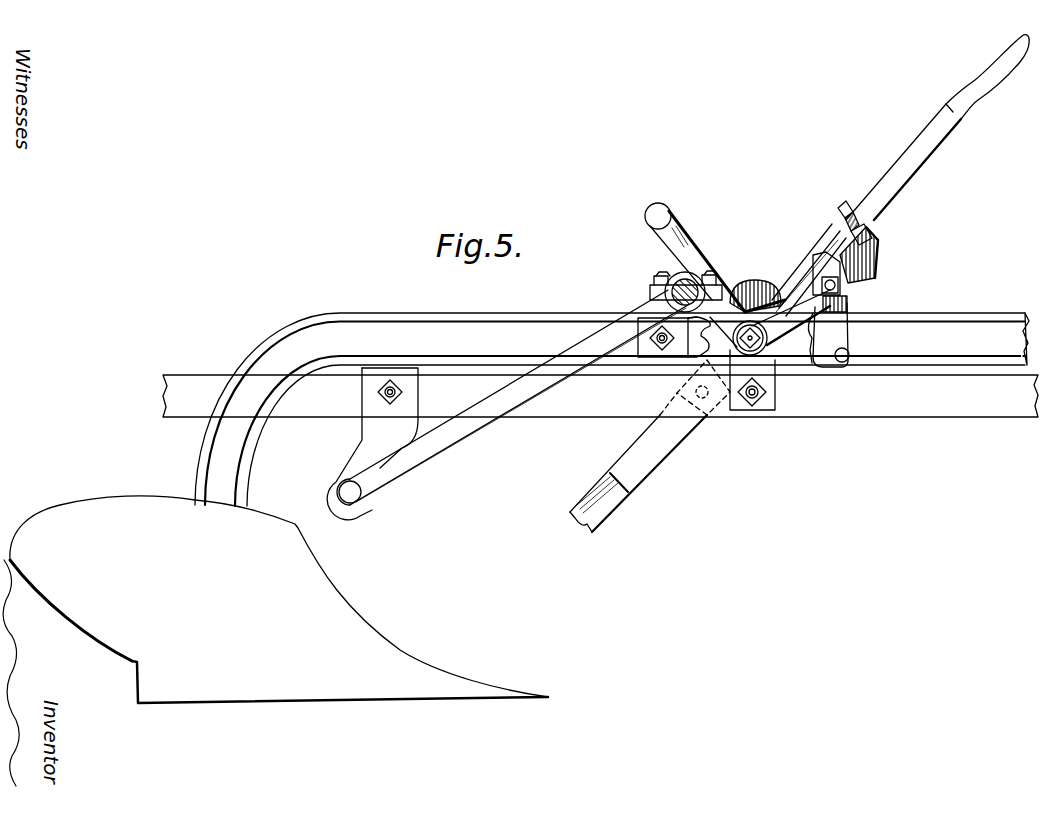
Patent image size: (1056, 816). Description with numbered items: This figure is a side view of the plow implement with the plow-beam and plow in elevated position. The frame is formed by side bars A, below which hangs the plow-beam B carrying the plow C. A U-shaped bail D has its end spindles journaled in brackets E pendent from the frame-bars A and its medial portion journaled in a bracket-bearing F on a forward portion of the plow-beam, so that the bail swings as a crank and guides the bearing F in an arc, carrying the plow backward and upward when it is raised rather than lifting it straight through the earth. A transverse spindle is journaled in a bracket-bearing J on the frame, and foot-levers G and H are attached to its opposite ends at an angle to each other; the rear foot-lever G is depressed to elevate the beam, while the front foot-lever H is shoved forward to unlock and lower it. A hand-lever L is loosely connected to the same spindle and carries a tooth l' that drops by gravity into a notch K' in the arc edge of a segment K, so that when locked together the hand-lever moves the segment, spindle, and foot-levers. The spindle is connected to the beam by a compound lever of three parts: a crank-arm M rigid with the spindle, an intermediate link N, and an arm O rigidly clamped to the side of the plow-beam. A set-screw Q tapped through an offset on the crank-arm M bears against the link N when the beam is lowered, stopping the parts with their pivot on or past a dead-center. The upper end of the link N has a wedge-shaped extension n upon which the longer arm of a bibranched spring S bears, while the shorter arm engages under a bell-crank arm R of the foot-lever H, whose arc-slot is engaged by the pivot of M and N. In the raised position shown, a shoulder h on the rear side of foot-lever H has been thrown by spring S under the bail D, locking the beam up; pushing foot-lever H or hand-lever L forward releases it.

The side bars of the frame A is at (1020, 309).
The plow-beam B is at (994, 441).
The plow C is at (279, 599).
The bail D is at (480, 424).
The brackets E is at (362, 438).
The bracket-bearing F is at (650, 301).
The foot-lever G is at (650, 446).
The foot-lever H is at (685, 257).
The offset or shoulder h is at (688, 302).
The segment K is at (770, 305).
The notch K' is at (714, 277).
The bracket-bearing J is at (776, 380).
The bell-crank arm R is at (773, 283).
The tooth l' is at (807, 272).
The hand-lever L is at (937, 127).
The set-screw Q is at (838, 209).
The wedge-shaped extension n is at (863, 220).
The lever-arm M is at (872, 268).
The link N is at (848, 303).
The arm or bracket O is at (847, 337).
The spring S is at (806, 338).